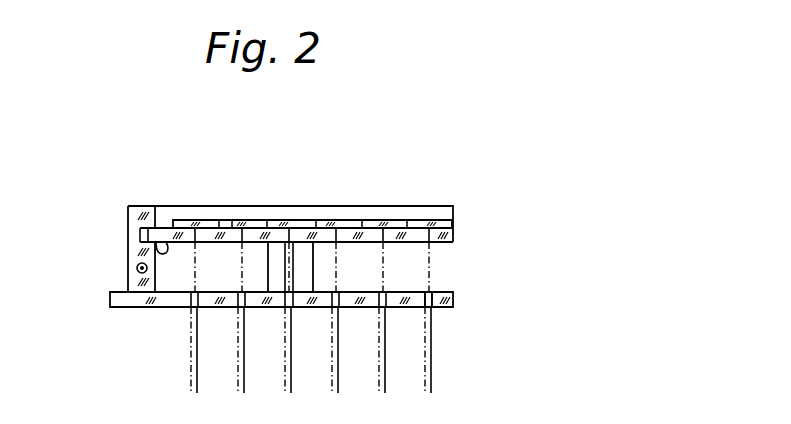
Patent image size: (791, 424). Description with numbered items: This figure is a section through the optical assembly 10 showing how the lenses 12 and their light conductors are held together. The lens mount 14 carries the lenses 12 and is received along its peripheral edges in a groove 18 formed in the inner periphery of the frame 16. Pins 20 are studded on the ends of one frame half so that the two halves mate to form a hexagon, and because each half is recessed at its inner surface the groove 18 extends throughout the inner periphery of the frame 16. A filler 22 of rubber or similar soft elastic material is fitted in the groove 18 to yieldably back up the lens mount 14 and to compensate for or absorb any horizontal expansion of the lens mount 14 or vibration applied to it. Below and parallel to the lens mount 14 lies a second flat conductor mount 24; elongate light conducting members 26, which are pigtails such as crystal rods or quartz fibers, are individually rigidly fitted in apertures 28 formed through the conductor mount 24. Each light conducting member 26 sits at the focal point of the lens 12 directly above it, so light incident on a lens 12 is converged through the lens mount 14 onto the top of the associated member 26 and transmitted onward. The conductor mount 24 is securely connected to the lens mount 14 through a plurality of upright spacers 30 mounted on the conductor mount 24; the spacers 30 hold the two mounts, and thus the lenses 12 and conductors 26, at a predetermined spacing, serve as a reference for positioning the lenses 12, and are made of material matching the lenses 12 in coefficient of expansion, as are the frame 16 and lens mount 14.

The connector assembly 10 is at (350, 200).
The lenses 12 is at (232, 220).
The lens mount 14 is at (169, 227).
The frame 16 is at (150, 206).
The groove 18 is at (128, 257).
The pins 20 is at (140, 268).
The filler 22 is at (141, 233).
The conductor mount 24 is at (175, 308).
The light conducting members 26 is at (432, 355).
The apertures 28 is at (430, 303).
The upright spacers 30 is at (267, 260).